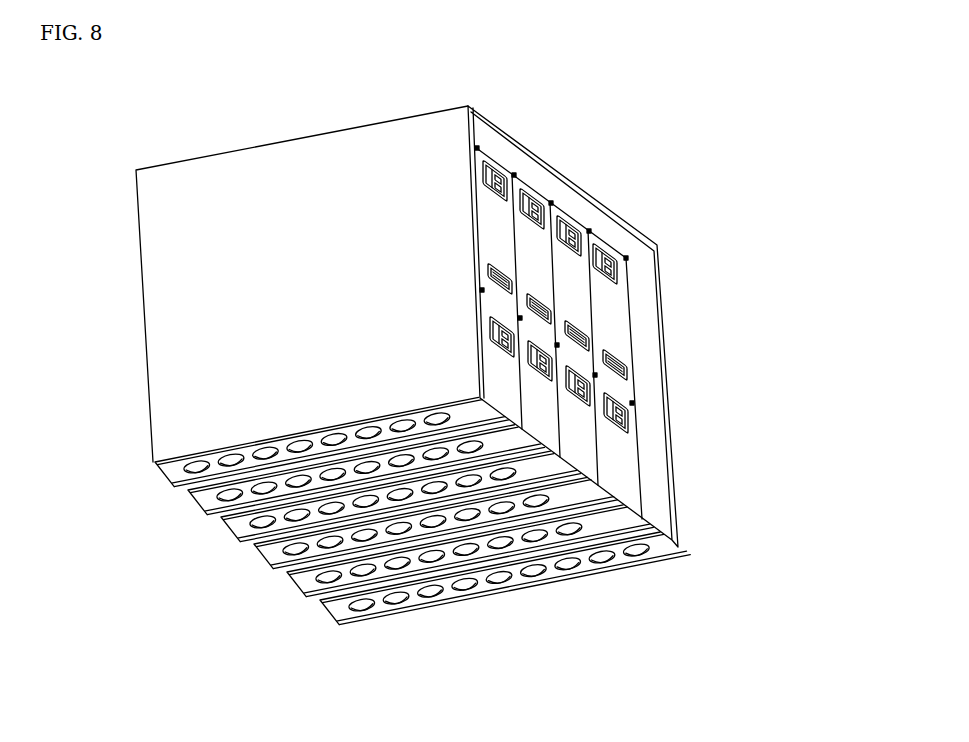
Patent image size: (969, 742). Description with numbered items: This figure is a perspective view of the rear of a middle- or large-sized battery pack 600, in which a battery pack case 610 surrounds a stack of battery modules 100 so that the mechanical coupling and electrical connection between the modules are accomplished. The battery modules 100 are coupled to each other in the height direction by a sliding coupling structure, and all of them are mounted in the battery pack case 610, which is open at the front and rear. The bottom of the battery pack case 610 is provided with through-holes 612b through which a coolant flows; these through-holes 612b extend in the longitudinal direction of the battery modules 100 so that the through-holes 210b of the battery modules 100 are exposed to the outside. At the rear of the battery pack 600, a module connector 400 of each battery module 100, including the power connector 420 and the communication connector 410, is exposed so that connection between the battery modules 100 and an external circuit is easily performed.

The middle- or large-sized battery pack 600 is at (83, 124).
The battery pack case 610 is at (537, 165).
The through-hole 612b is at (290, 452).
The through-hole 210b is at (310, 563).
The communication connector 410 is at (623, 263).
The power connector 420 is at (620, 322).
The module connector 400 is at (651, 297).
The battery module 100 is at (625, 473).